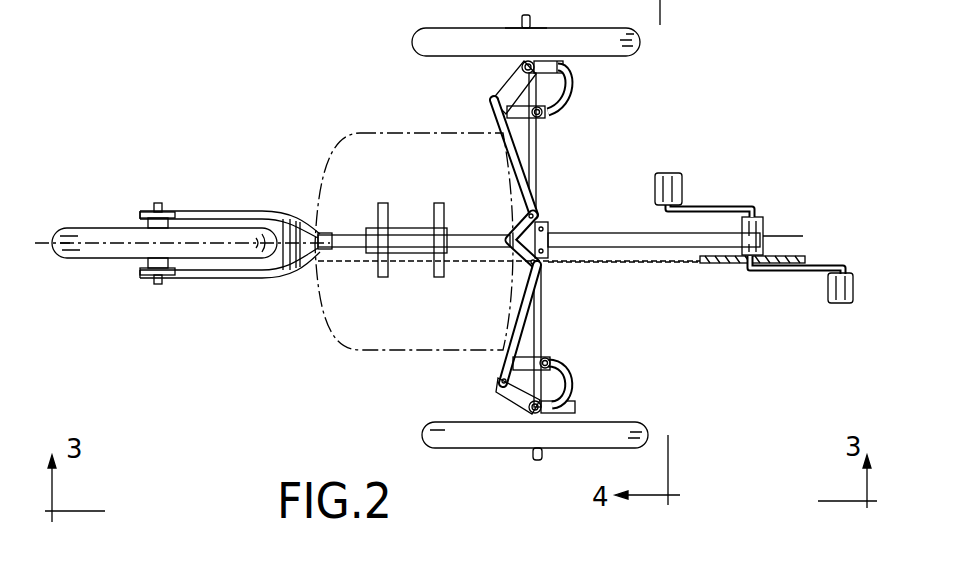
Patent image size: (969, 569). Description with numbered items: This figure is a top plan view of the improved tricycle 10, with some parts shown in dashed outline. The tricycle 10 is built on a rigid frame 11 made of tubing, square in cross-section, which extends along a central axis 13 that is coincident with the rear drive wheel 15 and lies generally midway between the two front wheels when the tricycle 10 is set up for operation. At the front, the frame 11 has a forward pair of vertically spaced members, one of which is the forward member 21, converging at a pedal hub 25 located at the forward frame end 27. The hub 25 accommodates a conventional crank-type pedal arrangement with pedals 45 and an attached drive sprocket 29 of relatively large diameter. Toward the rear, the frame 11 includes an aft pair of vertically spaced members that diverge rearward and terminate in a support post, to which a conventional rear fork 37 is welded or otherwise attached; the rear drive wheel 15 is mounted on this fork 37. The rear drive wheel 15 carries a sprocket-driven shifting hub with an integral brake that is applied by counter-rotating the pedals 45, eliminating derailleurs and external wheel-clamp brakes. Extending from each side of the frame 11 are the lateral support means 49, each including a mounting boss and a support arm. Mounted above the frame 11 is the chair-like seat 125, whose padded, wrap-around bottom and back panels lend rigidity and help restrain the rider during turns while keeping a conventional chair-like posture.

The tricycle 10 is at (236, 94).
The frame 11 is at (480, 234).
The central axis 13 is at (110, 303).
The rear drive wheel 15 is at (146, 260).
The forward frame member 21 is at (573, 232).
The pedal hub 25 is at (764, 218).
The forward frame end 27 is at (722, 230).
The drive sprocket 29 is at (805, 262).
The rear fork 37 is at (268, 210).
The pedals 45 is at (668, 172).
The lateral support means 49 is at (578, 325).
The seat 125 is at (362, 134).